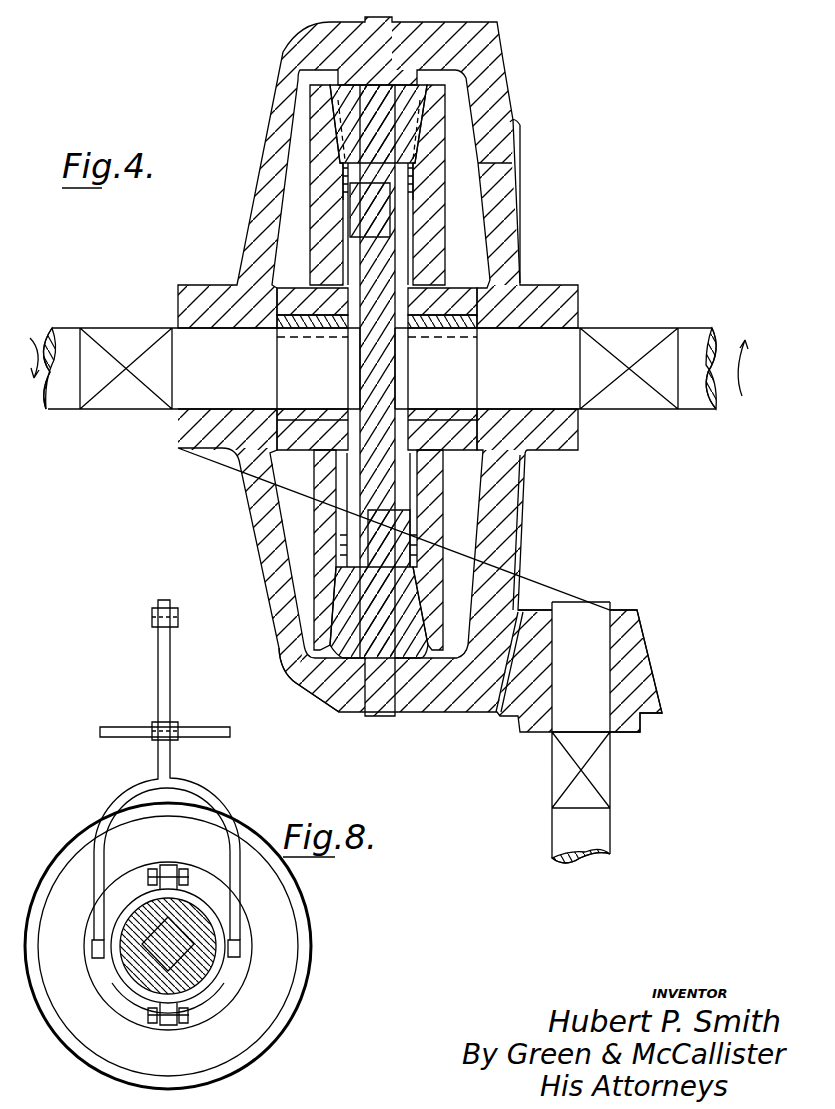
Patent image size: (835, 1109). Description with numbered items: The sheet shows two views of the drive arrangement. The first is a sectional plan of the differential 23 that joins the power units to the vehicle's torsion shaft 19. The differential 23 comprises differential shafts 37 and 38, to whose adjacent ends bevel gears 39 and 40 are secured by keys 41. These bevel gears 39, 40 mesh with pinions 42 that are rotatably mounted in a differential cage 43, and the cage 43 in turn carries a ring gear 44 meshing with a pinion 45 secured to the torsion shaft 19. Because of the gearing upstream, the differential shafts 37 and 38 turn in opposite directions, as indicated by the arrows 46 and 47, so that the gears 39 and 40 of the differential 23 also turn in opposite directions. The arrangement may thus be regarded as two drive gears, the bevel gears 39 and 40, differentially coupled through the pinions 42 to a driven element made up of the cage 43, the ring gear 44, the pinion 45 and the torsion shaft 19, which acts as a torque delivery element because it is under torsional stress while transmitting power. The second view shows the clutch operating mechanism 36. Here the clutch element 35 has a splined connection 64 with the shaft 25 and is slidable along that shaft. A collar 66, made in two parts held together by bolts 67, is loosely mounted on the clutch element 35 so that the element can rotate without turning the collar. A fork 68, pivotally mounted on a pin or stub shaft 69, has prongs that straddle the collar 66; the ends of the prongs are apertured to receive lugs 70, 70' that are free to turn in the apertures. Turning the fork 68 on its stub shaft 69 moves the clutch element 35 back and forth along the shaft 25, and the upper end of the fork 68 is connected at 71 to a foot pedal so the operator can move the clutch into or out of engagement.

In FIG. 4, the torsion shaft 19 is at (600, 833).
In FIG. 4, the differential 23 is at (222, 154).
In FIG. 4, the differential shaft 37 is at (108, 340).
In FIG. 4, the differential shaft 38 is at (644, 341).
In FIG. 4, the bevel gear 39 is at (310, 215).
In FIG. 4, the bevel gear 40 is at (443, 232).
In FIG. 4, the key 41 is at (297, 318).
In FIG. 4, the pinion 42 is at (297, 675).
In FIG. 4, the differential cage 43 is at (275, 102).
In FIG. 4, the ring gear 44 is at (512, 118).
In FIG. 4, the pinion 45 is at (648, 690).
In FIG. 4, the arrow 46 is at (26, 342).
In FIG. 4, the arrow 47 is at (735, 368).
In FIG. 8, the shaft 25 is at (210, 972).
In FIG. 8, the clutch element 35 is at (305, 952).
In FIG. 8, the clutch operating mechanism 36 is at (276, 819).
In FIG. 8, the splined connection 64 is at (167, 972).
In FIG. 8, the collar 66 is at (193, 997).
In FIG. 8, the bolt 67 is at (178, 868).
In FIG. 8, the fork 68 is at (172, 707).
In FIG. 8, the stub shaft 69 is at (208, 736).
In FIG. 8, the lug 70 is at (258, 947).
In FIG. 8, the pivot pin 70' is at (75, 965).
In FIG. 8, the connection to foot pedal 71 is at (152, 617).